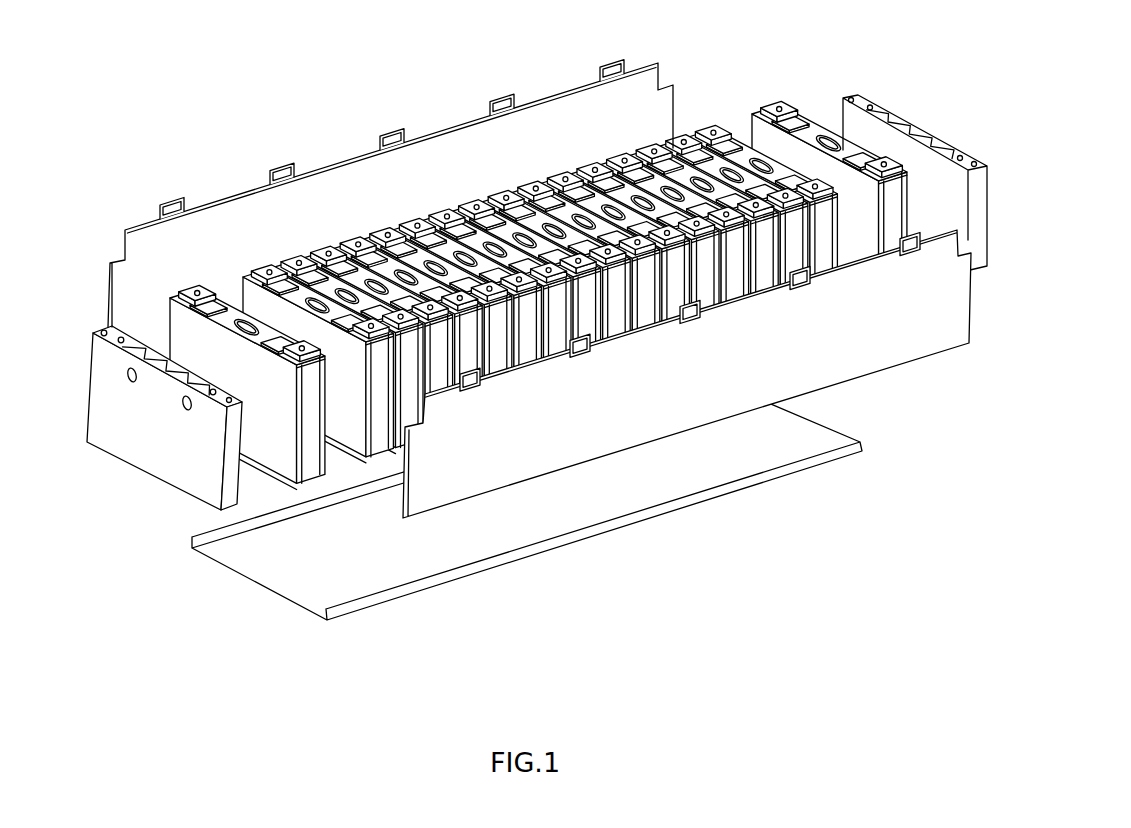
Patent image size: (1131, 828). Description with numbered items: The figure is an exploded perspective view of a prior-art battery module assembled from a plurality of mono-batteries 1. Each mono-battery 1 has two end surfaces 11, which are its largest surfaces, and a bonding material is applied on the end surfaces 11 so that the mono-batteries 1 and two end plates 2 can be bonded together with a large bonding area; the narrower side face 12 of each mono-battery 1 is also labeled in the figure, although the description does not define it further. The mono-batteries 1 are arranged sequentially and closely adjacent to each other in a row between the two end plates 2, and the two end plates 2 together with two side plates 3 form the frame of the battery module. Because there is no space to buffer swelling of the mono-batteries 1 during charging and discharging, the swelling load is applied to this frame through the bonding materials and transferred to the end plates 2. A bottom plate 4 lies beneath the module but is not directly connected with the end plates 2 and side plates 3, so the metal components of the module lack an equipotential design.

The mono-battery 1 is at (611, 260).
The end plate 2 is at (96, 328).
The side plate 3 is at (473, 118).
The bottom plate 4 is at (291, 600).
The end surface 11 is at (832, 130).
The end face of battery cell 12 is at (758, 112).